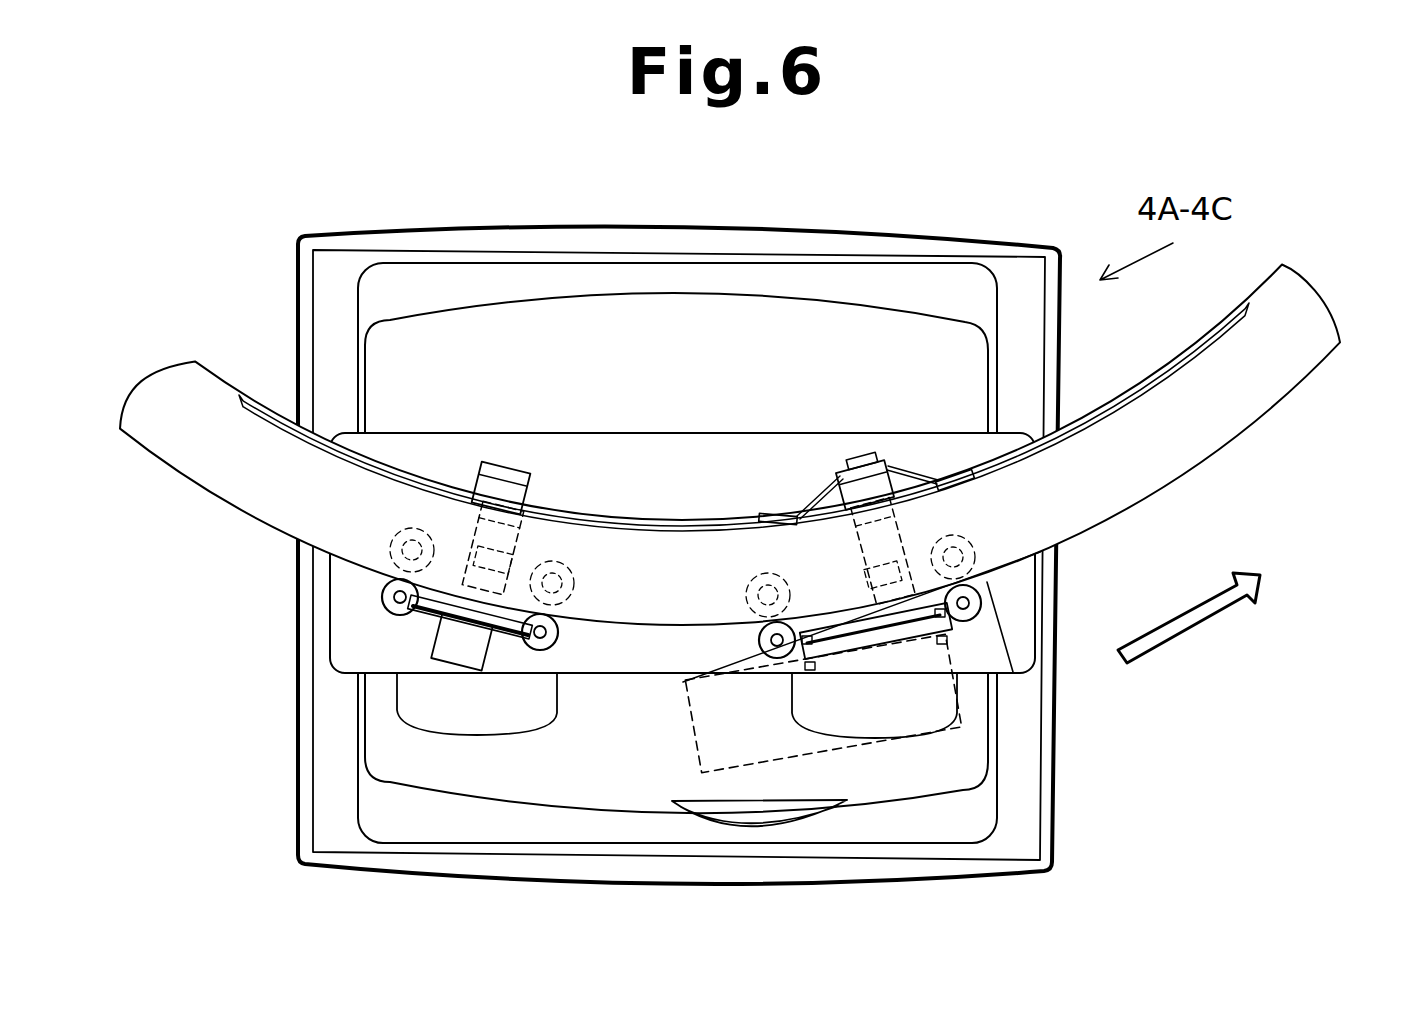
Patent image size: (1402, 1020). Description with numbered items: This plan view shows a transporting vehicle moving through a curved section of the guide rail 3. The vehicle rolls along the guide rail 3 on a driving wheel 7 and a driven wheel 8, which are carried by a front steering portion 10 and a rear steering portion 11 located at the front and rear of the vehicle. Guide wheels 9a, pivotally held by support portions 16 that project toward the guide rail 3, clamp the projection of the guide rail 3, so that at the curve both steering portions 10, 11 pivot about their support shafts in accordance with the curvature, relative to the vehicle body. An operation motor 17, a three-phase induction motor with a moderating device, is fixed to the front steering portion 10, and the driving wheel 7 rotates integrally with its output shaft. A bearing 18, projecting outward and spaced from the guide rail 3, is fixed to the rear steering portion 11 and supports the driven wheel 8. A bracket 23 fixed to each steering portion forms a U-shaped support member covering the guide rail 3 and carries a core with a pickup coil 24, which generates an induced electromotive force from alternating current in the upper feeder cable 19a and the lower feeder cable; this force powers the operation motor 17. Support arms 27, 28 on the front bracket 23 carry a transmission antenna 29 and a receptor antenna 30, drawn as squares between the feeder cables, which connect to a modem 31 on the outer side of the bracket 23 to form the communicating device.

The guide rail 3 is at (1257, 426).
The driving wheel 7 is at (867, 551).
The driven wheel 8 is at (553, 570).
The guide wheel 9a is at (382, 578).
The front steering portion 10 is at (888, 663).
The rear steering portion 11 is at (428, 633).
The support portion 16 is at (540, 652).
The operation motor 17 is at (823, 715).
The bearing 18 is at (455, 668).
The upper feeder cable 19a is at (1152, 369).
The bracket 23 is at (505, 468).
The pickup coil 24 is at (535, 497).
The first support arm 27 is at (905, 468).
The second support arm 28 is at (805, 503).
The transmission antenna 29 is at (950, 470).
The receptor antenna 30 is at (762, 516).
The modem 31 is at (852, 457).